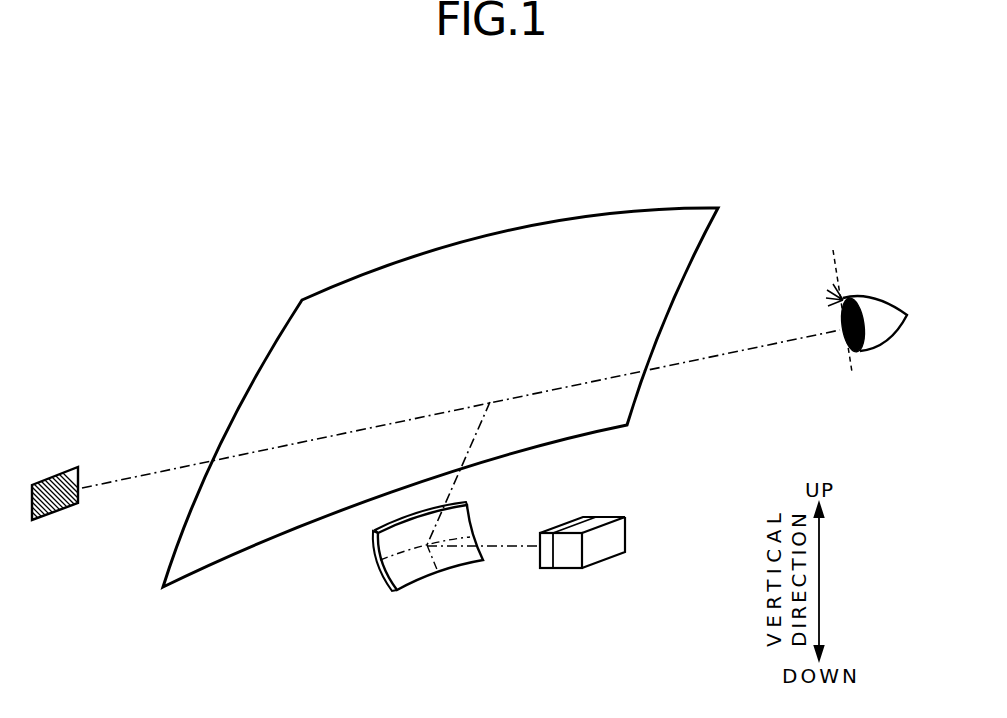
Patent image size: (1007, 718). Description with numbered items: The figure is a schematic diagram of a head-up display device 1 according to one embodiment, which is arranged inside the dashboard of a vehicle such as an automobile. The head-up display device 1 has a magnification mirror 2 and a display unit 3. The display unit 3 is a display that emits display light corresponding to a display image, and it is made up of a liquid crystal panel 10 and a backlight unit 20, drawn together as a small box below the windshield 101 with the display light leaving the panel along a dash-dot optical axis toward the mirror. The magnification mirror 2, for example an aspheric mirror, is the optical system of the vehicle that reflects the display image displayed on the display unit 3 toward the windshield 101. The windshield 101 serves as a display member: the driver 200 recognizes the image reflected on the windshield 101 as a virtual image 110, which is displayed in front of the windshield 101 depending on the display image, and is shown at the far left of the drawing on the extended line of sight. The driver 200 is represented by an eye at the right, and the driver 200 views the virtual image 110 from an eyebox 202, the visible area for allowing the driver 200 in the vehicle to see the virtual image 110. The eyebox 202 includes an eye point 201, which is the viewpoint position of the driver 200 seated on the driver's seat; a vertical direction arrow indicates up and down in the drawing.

The head-up display device 1 is at (262, 157).
The windshield 101 is at (600, 210).
The virtual image 110 is at (63, 470).
The magnification mirror 2 is at (377, 587).
The display unit 3 is at (627, 588).
The liquid crystal panel 10 is at (545, 557).
The backlight unit 20 is at (615, 533).
The driver 200 is at (843, 288).
The eye point 201 is at (841, 327).
The eyebox 202 is at (837, 282).